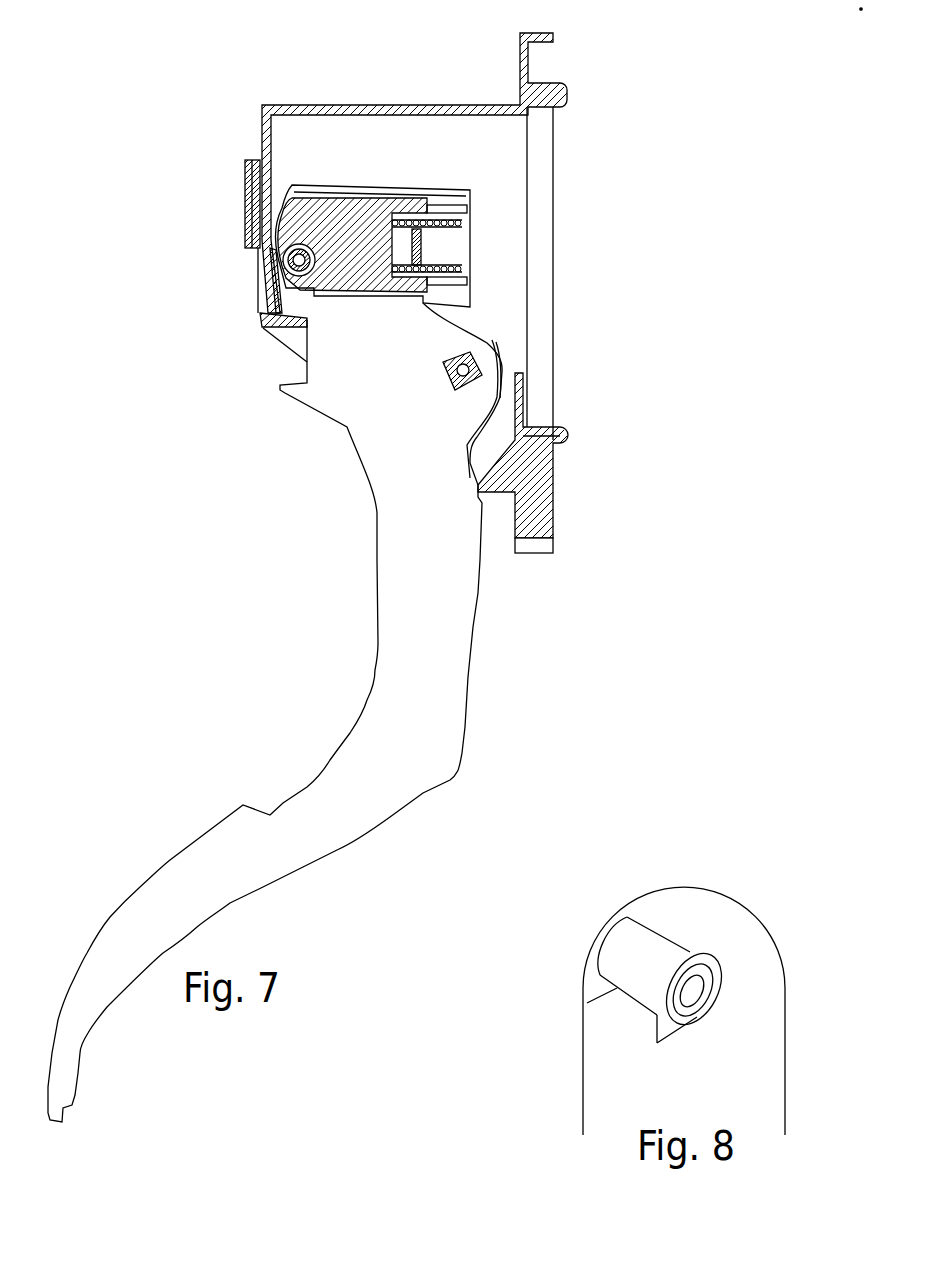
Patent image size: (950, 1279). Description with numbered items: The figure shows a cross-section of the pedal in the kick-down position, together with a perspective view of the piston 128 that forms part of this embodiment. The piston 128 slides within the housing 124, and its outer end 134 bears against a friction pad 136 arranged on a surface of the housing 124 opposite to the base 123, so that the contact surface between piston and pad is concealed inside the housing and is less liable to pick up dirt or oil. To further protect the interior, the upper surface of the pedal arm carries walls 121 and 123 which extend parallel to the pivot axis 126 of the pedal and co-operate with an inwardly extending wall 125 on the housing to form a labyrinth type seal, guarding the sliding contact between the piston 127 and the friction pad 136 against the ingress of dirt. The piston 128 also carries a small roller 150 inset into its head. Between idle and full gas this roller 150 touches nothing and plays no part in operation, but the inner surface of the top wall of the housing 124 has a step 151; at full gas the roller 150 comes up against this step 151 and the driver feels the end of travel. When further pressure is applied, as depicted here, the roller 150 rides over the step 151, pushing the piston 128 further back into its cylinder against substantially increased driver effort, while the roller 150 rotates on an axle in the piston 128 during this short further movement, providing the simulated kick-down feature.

In FIG. 7, the wall 121 is at (288, 390).
In FIG. 7, the wall 123 is at (267, 325).
In FIG. 7, the housing 124 is at (452, 104).
In FIG. 7, the inwardly extending wall 125 is at (417, 165).
In FIG. 7, the pivot axis 126 is at (471, 353).
In FIG. 7, the piston 127 is at (473, 195).
In FIG. 7, the piston 128 is at (328, 200).
In FIG. 8, the piston 128 is at (762, 978).
In FIG. 7, the outer end 134 is at (287, 208).
In FIG. 7, the friction pad 136 is at (257, 170).
In FIG. 7, the roller 150 is at (283, 254).
In FIG. 8, the roller 150 is at (638, 938).
In FIG. 7, the step 151 is at (275, 270).